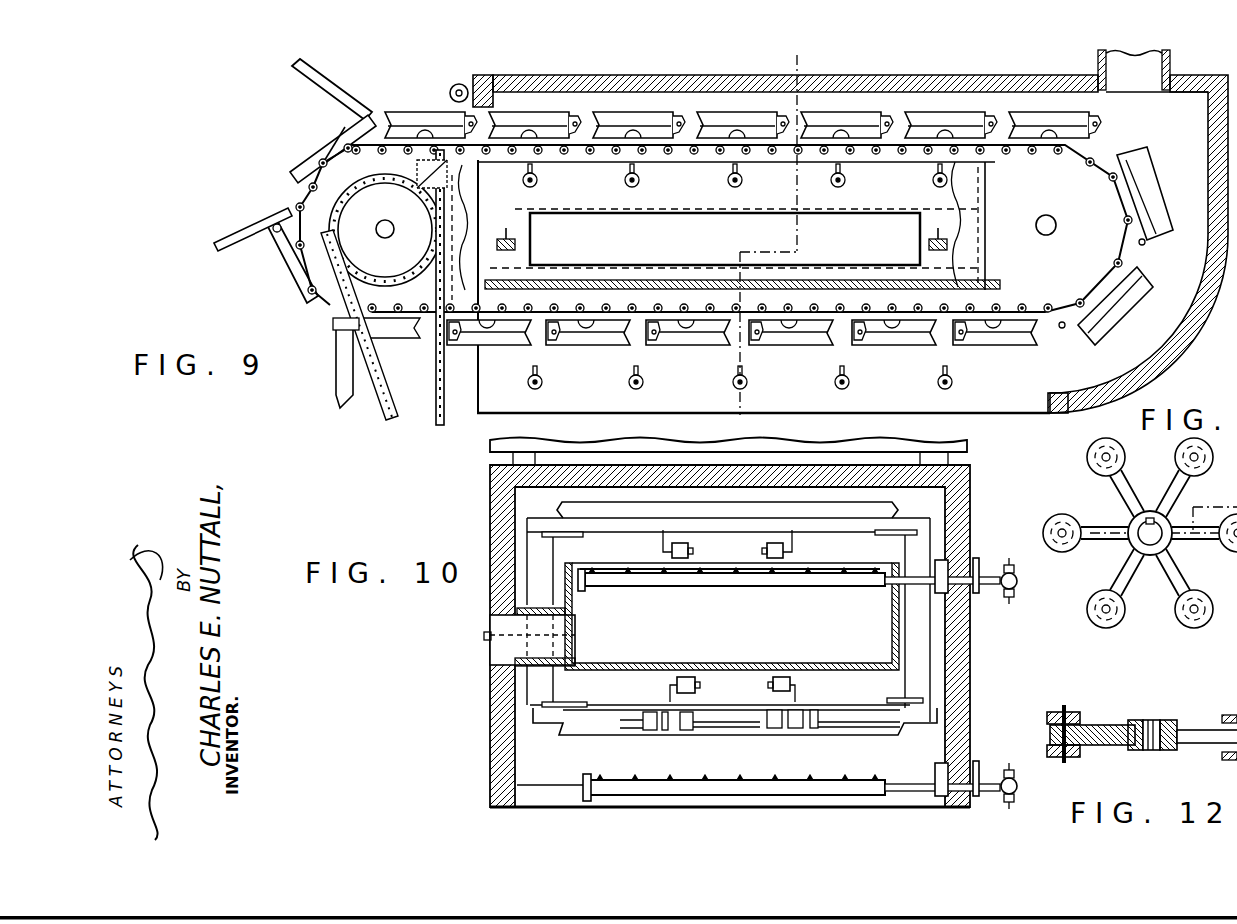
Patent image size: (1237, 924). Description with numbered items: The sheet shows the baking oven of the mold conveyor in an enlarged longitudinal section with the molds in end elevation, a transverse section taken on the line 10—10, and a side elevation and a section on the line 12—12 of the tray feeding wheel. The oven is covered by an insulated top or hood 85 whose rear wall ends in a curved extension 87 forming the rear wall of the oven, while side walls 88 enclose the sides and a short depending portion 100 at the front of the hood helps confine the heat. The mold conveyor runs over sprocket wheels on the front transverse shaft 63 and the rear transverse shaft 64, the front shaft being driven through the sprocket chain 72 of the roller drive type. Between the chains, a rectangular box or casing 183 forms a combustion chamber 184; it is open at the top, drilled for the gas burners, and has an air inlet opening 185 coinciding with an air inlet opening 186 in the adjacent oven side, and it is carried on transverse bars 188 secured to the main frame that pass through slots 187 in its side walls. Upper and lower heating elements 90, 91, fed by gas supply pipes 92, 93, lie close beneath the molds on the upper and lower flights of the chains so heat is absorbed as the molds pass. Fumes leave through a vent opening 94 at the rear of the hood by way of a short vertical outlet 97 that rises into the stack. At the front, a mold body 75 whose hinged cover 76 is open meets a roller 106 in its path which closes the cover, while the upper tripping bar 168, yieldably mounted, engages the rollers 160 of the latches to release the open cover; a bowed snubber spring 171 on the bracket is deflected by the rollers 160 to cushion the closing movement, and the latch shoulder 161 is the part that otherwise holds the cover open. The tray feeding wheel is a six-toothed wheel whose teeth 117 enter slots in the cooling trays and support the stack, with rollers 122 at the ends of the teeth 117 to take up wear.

In FIG. 9, the section line 10— 10 is at (820, 63).
In FIG. 11, the section line 12— 12 is at (1041, 532).
In FIG. 9, the front transverse shaft 63 is at (386, 240).
In FIG. 9, the rear transverse shaft 64 is at (1052, 216).
In FIG. 9, the sprocket chain 72 is at (438, 373).
In FIG. 9, the vane link plate 75 is at (328, 143).
In FIG. 9, the hinged section or cover 76 is at (327, 95).
In FIG. 9, the insulated top or hood 85 is at (883, 74).
In FIG. 10, the insulated top or hood 85 is at (545, 473).
In FIG. 9, the curved extension 87 is at (1066, 393).
In FIG. 9, the side walls 88 is at (590, 413).
In FIG. 9, the upper heating element 90 is at (824, 204).
In FIG. 10, the upper heating element 90 is at (745, 578).
In FIG. 9, the lower heating element 91 is at (850, 383).
In FIG. 10, the lower heating element 91 is at (742, 781).
In FIG. 10, the gas supply pipe 92 is at (1017, 583).
In FIG. 10, the gas supply pipe 93 is at (1018, 792).
In FIG. 9, the vent opening 94 is at (1097, 68).
In FIG. 9, the vertical outlet 97 is at (1147, 82).
In FIG. 9, the depending portion 100 is at (495, 88).
In FIG. 9, the roller 106 is at (457, 84).
In FIG. 11, the teeth 117 is at (1212, 540).
In FIG. 12, the teeth 117 is at (1094, 726).
In FIG. 11, the rollers 122 is at (1195, 626).
In FIG. 12, the rollers 122 is at (1062, 710).
In FIG. 10, the rollers 160 is at (690, 550).
In FIG. 9, the shoulder 161 is at (497, 289).
In FIG. 9, the upper tripping bar or member 168 is at (385, 230).
In FIG. 9, the snubber spring 171 is at (428, 162).
In FIG. 9, the box or casing 183 is at (600, 265).
In FIG. 10, the box or casing 183 is at (892, 595).
In FIG. 9, the combustion chamber 184 is at (742, 204).
In FIG. 10, the combustion chamber 184 is at (598, 597).
In FIG. 9, the air inlet opening 185 is at (818, 266).
In FIG. 10, the air inlet opening 185 is at (570, 625).
In FIG. 10, the air inlet opening 186 is at (503, 648).
In FIG. 9, the slots 187 is at (506, 238).
In FIG. 9, the bars 188 is at (516, 245).
In FIG. 10, the bars 188 is at (675, 634).